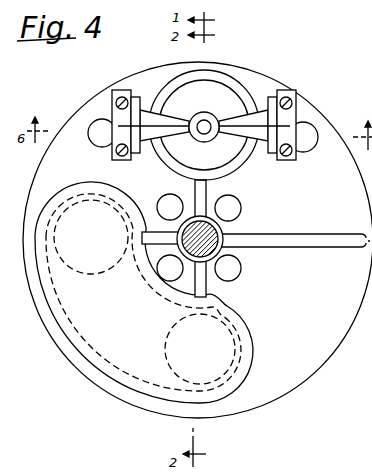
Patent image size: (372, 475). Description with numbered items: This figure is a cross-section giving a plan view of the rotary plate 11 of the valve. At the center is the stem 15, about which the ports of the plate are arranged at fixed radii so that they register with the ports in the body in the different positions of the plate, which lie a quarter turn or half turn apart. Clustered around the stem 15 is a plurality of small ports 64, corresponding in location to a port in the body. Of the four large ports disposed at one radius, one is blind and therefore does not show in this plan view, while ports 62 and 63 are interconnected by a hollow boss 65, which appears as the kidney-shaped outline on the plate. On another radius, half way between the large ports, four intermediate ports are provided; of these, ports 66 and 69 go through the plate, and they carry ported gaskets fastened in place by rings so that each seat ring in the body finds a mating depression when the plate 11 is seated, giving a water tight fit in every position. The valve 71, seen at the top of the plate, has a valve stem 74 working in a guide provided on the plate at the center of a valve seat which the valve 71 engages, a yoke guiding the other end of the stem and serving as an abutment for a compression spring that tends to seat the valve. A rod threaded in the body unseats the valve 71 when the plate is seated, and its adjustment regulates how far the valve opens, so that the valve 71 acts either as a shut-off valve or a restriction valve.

The rotary plate 11 is at (314, 370).
The stem 15 is at (209, 232).
The port 62 is at (173, 377).
The port 63 is at (65, 263).
The small ports 64 is at (241, 267).
The hollow boss 65 is at (90, 333).
The port 66 is at (99, 120).
The port 69 is at (314, 126).
The valve 71 is at (223, 88).
The valve stem 74 is at (203, 131).